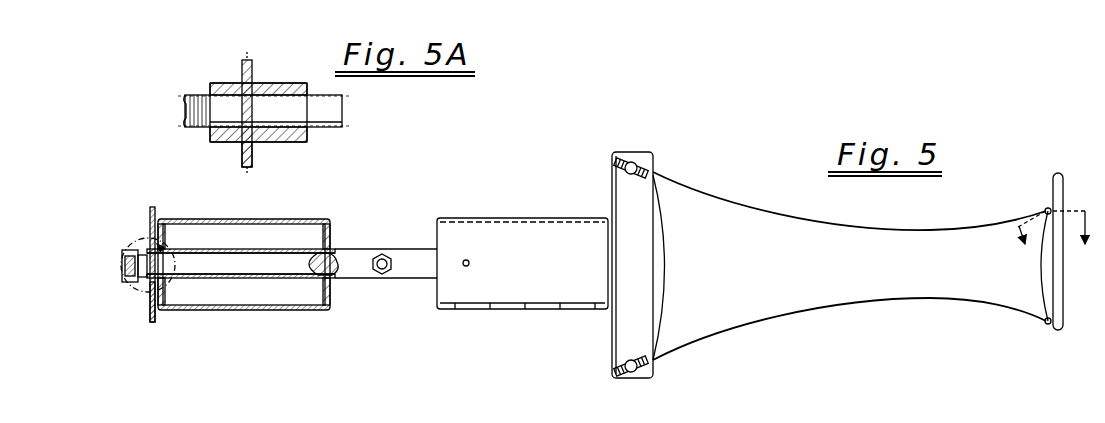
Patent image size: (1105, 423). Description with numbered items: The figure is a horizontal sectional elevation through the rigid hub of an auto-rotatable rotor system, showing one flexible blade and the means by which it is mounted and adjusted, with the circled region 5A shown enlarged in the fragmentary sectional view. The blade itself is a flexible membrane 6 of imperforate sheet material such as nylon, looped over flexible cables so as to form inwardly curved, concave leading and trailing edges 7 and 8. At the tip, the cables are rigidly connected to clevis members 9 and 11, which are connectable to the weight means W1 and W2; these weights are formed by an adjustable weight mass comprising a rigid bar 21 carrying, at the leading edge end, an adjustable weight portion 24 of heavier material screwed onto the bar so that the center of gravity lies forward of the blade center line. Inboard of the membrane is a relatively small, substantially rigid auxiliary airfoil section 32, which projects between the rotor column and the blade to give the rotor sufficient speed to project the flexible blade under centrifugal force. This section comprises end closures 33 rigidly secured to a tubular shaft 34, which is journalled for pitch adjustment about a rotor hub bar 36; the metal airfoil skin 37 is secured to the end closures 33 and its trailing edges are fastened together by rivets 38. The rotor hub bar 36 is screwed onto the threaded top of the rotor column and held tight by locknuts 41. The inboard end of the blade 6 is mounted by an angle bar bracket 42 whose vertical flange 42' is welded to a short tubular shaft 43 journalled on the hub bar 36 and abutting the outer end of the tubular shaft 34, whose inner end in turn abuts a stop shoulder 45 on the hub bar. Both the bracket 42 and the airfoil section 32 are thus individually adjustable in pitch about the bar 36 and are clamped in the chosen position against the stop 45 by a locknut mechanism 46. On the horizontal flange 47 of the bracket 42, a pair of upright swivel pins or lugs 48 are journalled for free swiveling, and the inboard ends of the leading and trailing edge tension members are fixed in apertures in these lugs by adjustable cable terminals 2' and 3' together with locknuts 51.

In FIG. 5, the adjustable cable terminal 2' is at (598, 150).
In FIG. 5, the adjustable cable terminal 3' is at (594, 367).
In FIG. 5, the enlarged fragmentary sectional view 5A is at (146, 255).
In FIG. 5, the flexible membrane 6 is at (871, 266).
In FIG. 5, the leading edge 7 is at (842, 226).
In FIG. 5, the trailing edge 8 is at (845, 306).
In FIG. 5, the clevis member 9 is at (1045, 209).
In FIG. 5, the clevis member 11 is at (1046, 323).
In FIG. 5, the rigid bar 21 is at (1063, 292).
In FIG. 5, the adjustable weight portion 24 is at (1054, 176).
In FIG. 5, the auxiliary airfoil section 32 is at (302, 310).
In FIG. 5, the end closure 33 is at (332, 222).
In FIG. 5A, the tubular shaft 34 is at (292, 88).
In FIG. 5, the tubular shaft 34 is at (250, 280).
In FIG. 5A, the rotor hub bar 36 is at (324, 118).
In FIG. 5, the rotor hub bar 36 is at (280, 255).
In FIG. 5, the airfoil skin 37 is at (245, 224).
In FIG. 5, the rivets 38 is at (483, 306).
In FIG. 5, the locknut 41 is at (386, 255).
In FIG. 5, the angle bar bracket 42 is at (677, 267).
In FIG. 5A, the vertical flange 42' is at (230, 110).
In FIG. 5, the vertical flange 42' is at (141, 254).
In FIG. 5A, the short tubular shaft 43 is at (240, 142).
In FIG. 5, the short tubular shaft 43 is at (150, 295).
In FIG. 5, the stop shoulder 45 is at (338, 256).
In FIG. 5, the locknut mechanism 46 is at (124, 282).
In FIG. 5, the horizontal flange 47 is at (640, 240).
In FIG. 5, the swivel pin 48 is at (655, 160).
In FIG. 5, the locknut 51 is at (626, 160).
In FIG. 5, the weight means W1 is at (1066, 190).
In FIG. 5, the weight means W2 is at (1066, 330).